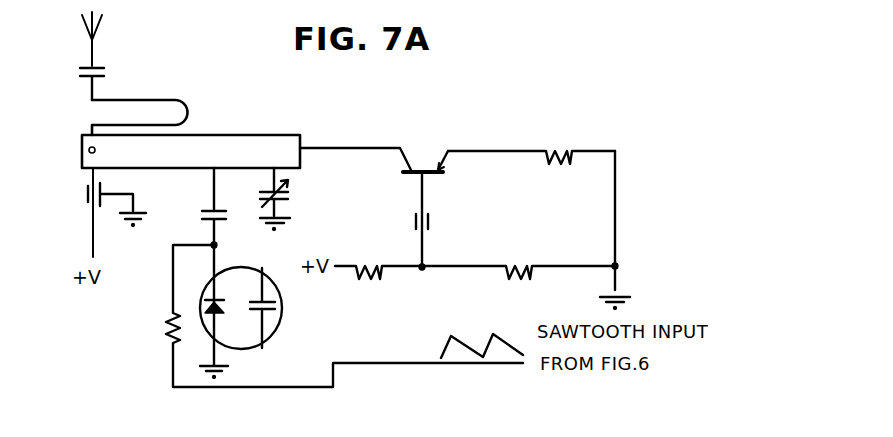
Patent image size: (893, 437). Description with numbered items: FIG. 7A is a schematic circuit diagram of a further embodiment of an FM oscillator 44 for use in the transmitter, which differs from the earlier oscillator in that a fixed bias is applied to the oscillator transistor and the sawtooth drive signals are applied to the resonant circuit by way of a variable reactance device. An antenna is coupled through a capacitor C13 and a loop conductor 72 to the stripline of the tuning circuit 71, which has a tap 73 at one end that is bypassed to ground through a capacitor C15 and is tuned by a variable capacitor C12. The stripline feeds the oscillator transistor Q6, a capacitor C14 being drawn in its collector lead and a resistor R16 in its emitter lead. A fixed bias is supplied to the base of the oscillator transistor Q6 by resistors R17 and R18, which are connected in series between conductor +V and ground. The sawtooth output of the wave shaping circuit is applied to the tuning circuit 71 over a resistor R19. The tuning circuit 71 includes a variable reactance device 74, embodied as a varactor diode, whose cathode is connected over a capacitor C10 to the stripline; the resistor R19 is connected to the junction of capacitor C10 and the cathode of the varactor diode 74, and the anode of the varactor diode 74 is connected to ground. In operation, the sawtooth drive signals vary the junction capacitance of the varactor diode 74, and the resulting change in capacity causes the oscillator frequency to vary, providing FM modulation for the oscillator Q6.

The antenna coupling capacitor C13 is at (107, 74).
The loop coupling conductor 72 is at (159, 111).
The tuning circuit (stripline) 71 is at (309, 131).
The feed point tap 73 is at (82, 156).
The bypass capacitor C15 is at (86, 200).
The capacitor C10 is at (194, 220).
The variable tuning capacitor C12 is at (284, 196).
The oscillator transistor Q6 is at (424, 167).
The capacitor C14 is at (452, 239).
The resistor R16 is at (578, 132).
The FM oscillator 44 is at (692, 209).
The resistor R17 is at (388, 236).
The resistor R18 is at (540, 236).
The resistor R19 is at (168, 334).
The variable reactance device (varactor diode) 74 is at (244, 349).